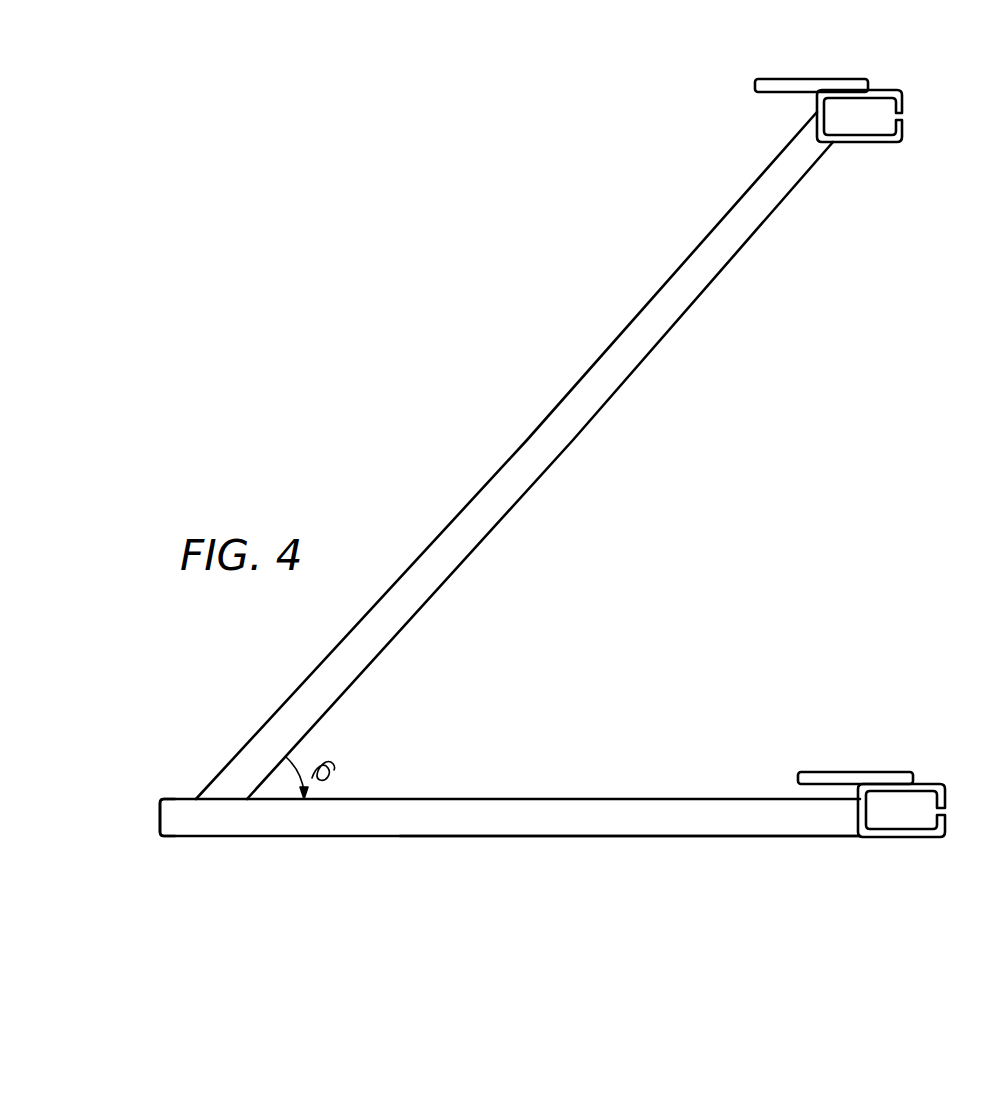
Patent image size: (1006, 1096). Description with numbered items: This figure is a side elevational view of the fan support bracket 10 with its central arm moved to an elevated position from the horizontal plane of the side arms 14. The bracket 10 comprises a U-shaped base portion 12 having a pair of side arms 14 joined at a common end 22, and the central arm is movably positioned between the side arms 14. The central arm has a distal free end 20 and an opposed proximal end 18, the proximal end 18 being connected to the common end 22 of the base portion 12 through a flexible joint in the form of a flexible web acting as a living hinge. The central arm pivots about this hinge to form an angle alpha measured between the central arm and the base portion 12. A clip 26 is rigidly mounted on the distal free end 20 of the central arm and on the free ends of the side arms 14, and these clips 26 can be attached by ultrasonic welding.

The fan support bracket 10 is at (803, 258).
The U-shaped base portion 12 is at (762, 835).
The side arms 14 is at (576, 828).
The proximal end 18 is at (191, 792).
The distal free end 20 is at (805, 123).
The common end 22 is at (160, 816).
The clip 26 is at (900, 91).